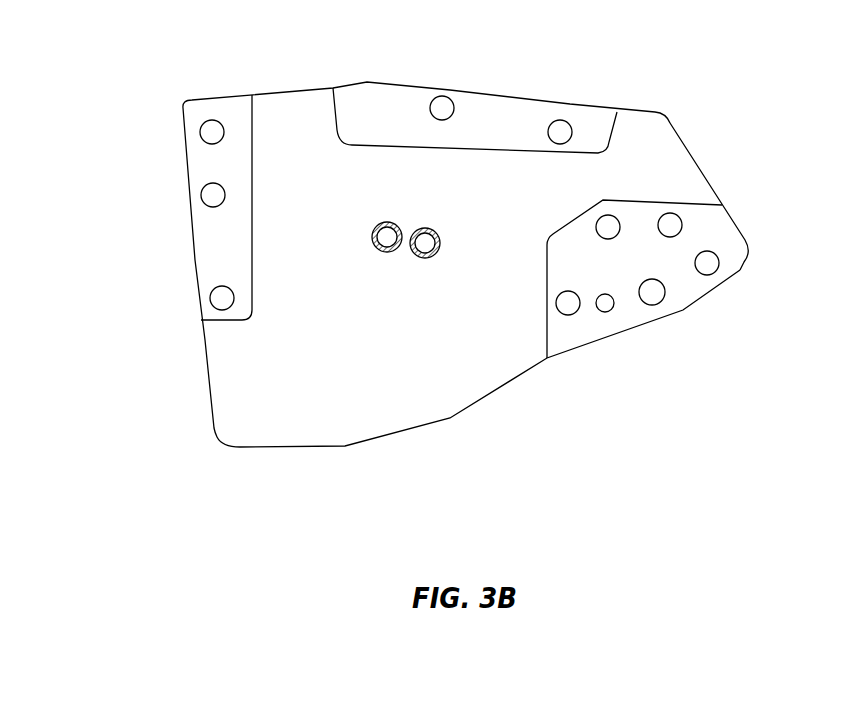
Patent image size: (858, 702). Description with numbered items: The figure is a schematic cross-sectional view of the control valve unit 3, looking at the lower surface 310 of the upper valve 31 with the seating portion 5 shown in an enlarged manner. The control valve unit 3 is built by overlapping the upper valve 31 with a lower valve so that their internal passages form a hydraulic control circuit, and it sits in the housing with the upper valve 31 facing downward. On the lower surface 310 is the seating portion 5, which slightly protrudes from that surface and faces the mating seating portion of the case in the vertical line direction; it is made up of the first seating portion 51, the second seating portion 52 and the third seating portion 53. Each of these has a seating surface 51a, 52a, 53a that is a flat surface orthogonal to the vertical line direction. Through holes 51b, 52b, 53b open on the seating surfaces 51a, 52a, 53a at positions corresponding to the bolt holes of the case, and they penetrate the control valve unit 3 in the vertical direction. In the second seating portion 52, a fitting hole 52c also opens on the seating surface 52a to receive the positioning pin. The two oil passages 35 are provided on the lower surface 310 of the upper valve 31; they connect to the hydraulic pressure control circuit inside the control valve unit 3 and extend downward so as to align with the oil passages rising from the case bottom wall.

The control valve unit 3 is at (160, 383).
The upper valve 31 is at (213, 421).
The lower surface 310 is at (468, 393).
The seating portion 5 is at (440, 376).
The first seating portion 51 is at (257, 295).
The seating surface 51a is at (240, 164).
The through holes 51b is at (222, 126).
The second seating portion 52 is at (543, 282).
The seating surface 52a is at (722, 240).
The through holes 52b is at (612, 220).
The fitting hole 52c is at (603, 312).
The third seating portion 53 is at (373, 147).
The seating surface 53a is at (357, 102).
The through holes 53b is at (440, 96).
The oil passages 35 is at (398, 226).